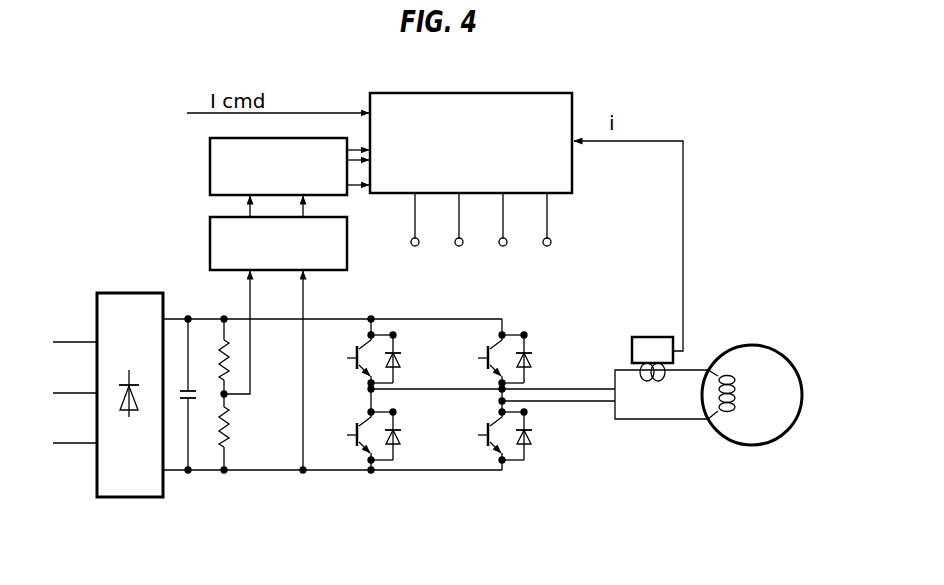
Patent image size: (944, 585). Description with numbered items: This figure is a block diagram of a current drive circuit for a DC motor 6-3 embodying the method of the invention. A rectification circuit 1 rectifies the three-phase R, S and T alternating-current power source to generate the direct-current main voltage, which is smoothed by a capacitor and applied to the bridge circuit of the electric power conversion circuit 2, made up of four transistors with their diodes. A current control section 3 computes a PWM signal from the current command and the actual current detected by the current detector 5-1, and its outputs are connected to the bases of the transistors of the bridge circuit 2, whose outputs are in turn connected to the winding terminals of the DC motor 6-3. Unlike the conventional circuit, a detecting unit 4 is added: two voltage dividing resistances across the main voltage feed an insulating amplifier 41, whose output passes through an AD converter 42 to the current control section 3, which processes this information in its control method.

The rectification circuit 1 is at (118, 293).
The electric power conversion circuit 2 is at (429, 494).
The current control section 3 is at (462, 93).
The main voltage detecting unit 4 is at (178, 201).
The insulating amplifier 41 is at (210, 242).
The AD converter 42 is at (210, 167).
The current detector 5-1 is at (632, 343).
The DC motor 6-3 is at (745, 345).